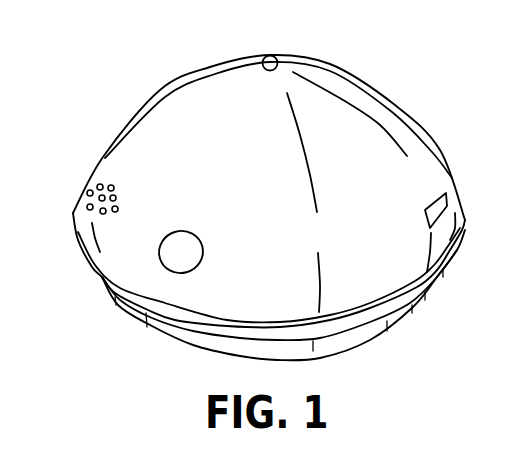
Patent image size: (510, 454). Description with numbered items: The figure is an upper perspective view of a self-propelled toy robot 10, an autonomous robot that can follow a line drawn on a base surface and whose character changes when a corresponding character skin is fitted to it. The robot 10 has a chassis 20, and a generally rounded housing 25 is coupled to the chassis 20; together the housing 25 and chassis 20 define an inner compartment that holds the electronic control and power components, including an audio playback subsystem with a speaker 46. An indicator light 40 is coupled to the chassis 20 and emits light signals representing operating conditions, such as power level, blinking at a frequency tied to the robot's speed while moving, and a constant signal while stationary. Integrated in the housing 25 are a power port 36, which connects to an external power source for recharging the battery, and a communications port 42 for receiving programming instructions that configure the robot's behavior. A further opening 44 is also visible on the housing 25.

The toy robot 10 is at (131, 88).
The chassis 20 is at (160, 327).
The housing 25 is at (373, 100).
The power port 36 is at (398, 200).
The communications port 42 is at (432, 202).
The indicator light 40 is at (267, 53).
The opening 44 is at (190, 243).
The speaker 46 is at (98, 184).